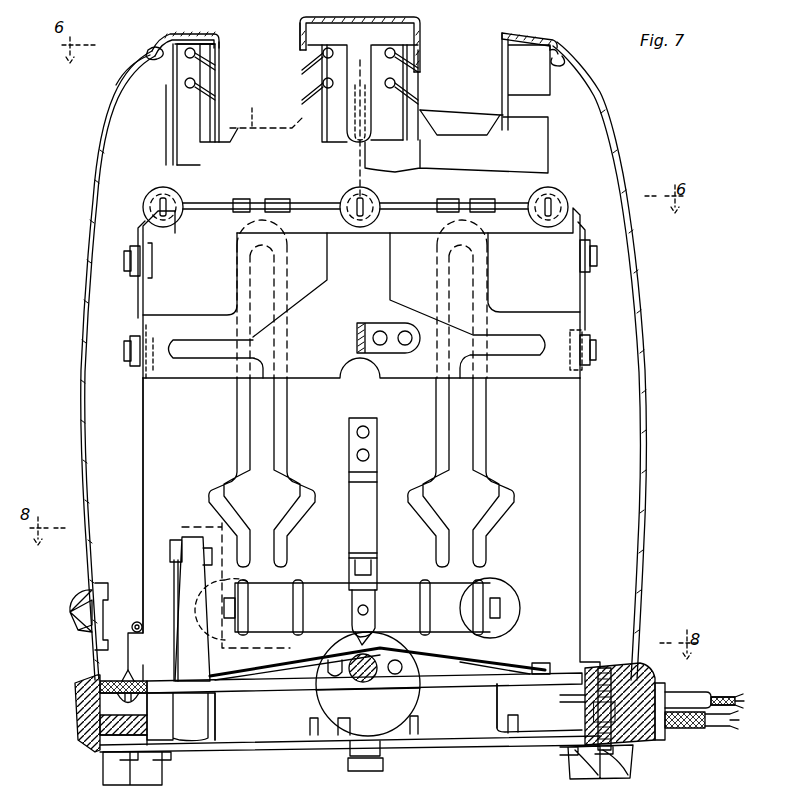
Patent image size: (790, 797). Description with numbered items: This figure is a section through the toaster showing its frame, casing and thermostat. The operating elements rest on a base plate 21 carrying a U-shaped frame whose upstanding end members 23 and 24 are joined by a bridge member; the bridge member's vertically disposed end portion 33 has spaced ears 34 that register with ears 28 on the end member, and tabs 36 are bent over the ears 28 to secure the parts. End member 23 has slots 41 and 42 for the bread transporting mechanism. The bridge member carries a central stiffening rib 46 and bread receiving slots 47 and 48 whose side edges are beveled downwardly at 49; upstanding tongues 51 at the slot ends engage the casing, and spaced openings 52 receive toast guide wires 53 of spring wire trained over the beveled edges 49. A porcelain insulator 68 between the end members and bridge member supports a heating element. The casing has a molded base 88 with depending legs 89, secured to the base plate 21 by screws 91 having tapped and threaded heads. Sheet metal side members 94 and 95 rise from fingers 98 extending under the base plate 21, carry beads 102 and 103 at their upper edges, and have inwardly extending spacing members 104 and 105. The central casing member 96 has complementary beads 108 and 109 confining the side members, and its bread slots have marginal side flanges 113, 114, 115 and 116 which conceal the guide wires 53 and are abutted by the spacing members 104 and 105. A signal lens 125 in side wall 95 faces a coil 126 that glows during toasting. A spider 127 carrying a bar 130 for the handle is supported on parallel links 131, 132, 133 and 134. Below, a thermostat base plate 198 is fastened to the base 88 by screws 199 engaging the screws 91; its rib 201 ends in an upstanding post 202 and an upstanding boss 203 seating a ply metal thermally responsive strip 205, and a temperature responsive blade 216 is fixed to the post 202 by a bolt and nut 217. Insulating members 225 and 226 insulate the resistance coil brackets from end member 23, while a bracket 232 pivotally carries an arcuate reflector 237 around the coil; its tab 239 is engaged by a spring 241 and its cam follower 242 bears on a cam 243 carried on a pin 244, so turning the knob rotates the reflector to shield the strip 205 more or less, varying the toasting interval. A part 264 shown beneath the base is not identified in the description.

The base plate 21 is at (112, 681).
The end member 23 is at (364, 529).
The end member 24 is at (456, 141).
The ear 28 is at (460, 200).
The end portion 33 is at (246, 170).
The ear 34 is at (443, 203).
The tab 36 is at (497, 200).
The slot 41 is at (455, 410).
The slot 42 is at (250, 414).
The stiffening rib 46 is at (355, 62).
The slot 47 is at (462, 45).
The slot 48 is at (261, 44).
The beveled edge 49 is at (212, 78).
The upstanding tongue 51 is at (253, 112).
The opening 52 is at (392, 48).
The toast guide wire 53 is at (420, 100).
The porcelain insulator 68 is at (172, 224).
The base 88 is at (659, 739).
The leg 89 is at (570, 768).
The screw 91 is at (560, 718).
The side member 94 is at (644, 263).
The side member 95 is at (90, 193).
The central casing member 96 is at (313, 19).
The finger 98 is at (80, 705).
The bead 102 is at (575, 52).
The bead 103 is at (132, 66).
The spacing member 104 is at (190, 36).
The spacing member 105 is at (530, 37).
The bead 108 is at (562, 45).
The bead 109 is at (156, 47).
The marginal side flange 113 is at (502, 33).
The marginal side flange 114 is at (421, 40).
The marginal side flange 115 is at (300, 36).
The marginal side flange 116 is at (222, 34).
The signal lens 125 is at (70, 606).
The coil 126 is at (132, 626).
The spider 127 is at (358, 278).
The bar 130 is at (356, 336).
The parallel link 131 is at (135, 278).
The parallel link 132 is at (134, 348).
The parallel link 133 is at (586, 243).
The parallel link 134 is at (586, 340).
The thermostat base plate 198 is at (440, 744).
The screw 199 is at (620, 760).
The rib 201 is at (398, 712).
The upstanding post 202 is at (143, 578).
The upstanding boss 203 is at (552, 662).
The thermally responsive strip 205 is at (505, 668).
The temperature responsive blade 216 is at (175, 626).
The bolt and nut 217 is at (178, 543).
The insulating member 225 is at (508, 592).
The insulating member 226 is at (222, 600).
The bracket 232 is at (420, 655).
The reflector 237 is at (396, 592).
The tab 239 is at (350, 578).
The spring 241 is at (352, 521).
The cam follower 242 is at (372, 632).
The cam 243 is at (410, 700).
The pin 244 is at (352, 684).
The knob 264 is at (348, 765).